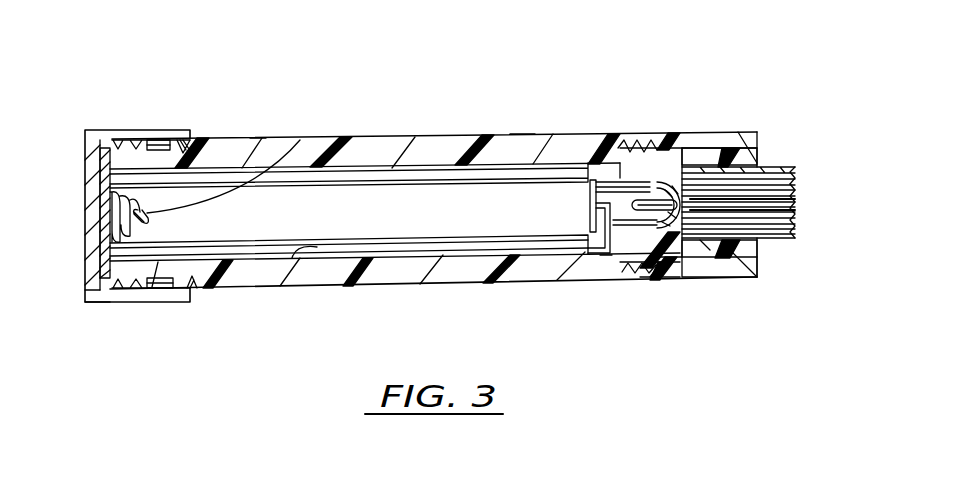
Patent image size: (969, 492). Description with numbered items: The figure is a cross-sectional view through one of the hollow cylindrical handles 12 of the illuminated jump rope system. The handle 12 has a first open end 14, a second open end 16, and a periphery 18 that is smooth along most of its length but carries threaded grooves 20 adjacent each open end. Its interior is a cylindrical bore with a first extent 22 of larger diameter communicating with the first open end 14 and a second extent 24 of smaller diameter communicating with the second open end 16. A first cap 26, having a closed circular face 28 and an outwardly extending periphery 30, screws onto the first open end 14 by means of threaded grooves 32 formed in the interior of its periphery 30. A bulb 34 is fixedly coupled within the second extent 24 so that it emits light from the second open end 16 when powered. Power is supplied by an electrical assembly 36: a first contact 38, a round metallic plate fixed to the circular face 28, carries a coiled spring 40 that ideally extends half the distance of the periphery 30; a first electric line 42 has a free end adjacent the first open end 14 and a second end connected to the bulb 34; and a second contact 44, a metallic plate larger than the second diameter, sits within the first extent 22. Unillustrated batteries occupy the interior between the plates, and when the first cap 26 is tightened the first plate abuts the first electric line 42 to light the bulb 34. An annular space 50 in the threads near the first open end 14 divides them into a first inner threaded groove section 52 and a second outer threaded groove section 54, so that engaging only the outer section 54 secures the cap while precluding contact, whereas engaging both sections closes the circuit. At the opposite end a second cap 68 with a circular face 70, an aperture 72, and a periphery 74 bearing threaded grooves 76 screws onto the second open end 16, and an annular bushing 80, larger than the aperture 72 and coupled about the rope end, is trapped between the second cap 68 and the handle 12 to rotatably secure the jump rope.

The handle 12 is at (521, 128).
The first open end 14 is at (120, 130).
The second open end 16 is at (614, 132).
The periphery 18 is at (396, 137).
The threaded grooves 20 is at (258, 138).
The first extent 22 is at (432, 208).
The second extent 24 is at (628, 242).
The first cap 26 is at (88, 302).
The circular face 28 is at (88, 178).
The periphery 30 is at (137, 138).
The threaded grooves 32 is at (182, 140).
The bulb 34 is at (690, 136).
The electrical assembly 36 is at (612, 258).
The first contact 38 is at (104, 242).
The coiled spring 40 is at (300, 140).
The first electric line 42 is at (308, 257).
The second contact 44 is at (593, 198).
The annular space 50 is at (157, 140).
The first inner threaded groove section 52 is at (195, 290).
The second outer threaded groove section 54 is at (150, 290).
The second cap 68 is at (760, 275).
The circular face 70 is at (760, 250).
The aperture 72 is at (760, 167).
The periphery 74 is at (745, 130).
The threaded grooves 76 is at (652, 255).
The annular bushing 80 is at (707, 248).